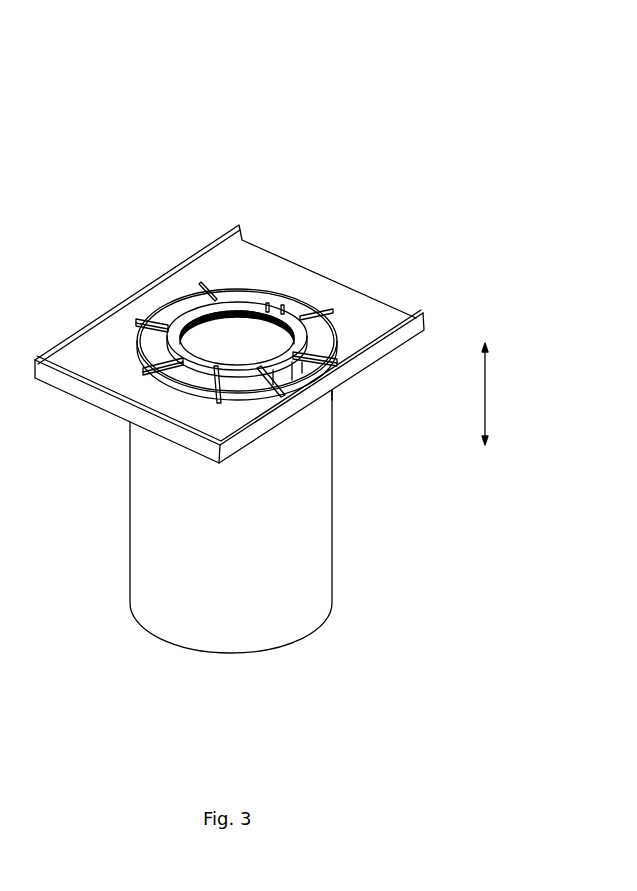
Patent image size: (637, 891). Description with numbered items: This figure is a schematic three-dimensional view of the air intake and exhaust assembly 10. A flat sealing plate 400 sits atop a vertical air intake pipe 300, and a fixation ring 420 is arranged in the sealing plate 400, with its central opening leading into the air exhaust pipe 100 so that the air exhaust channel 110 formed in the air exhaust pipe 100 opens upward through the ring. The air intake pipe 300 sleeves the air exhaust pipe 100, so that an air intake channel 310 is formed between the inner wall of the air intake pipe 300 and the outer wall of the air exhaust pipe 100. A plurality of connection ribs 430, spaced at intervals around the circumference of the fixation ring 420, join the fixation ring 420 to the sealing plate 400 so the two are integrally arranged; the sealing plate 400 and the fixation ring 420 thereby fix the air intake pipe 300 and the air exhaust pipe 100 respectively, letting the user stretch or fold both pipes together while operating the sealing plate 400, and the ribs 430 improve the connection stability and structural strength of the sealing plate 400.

The air intake and exhaust assembly 10 is at (203, 105).
The air exhaust pipe 100 is at (173, 378).
The air exhaust channel 110 is at (212, 335).
The air intake pipe 300 is at (155, 575).
The air intake channel 310 is at (333, 388).
The sealing plate 400 is at (352, 322).
The fixation ring 420 is at (305, 307).
The connection rib 430 is at (322, 313).